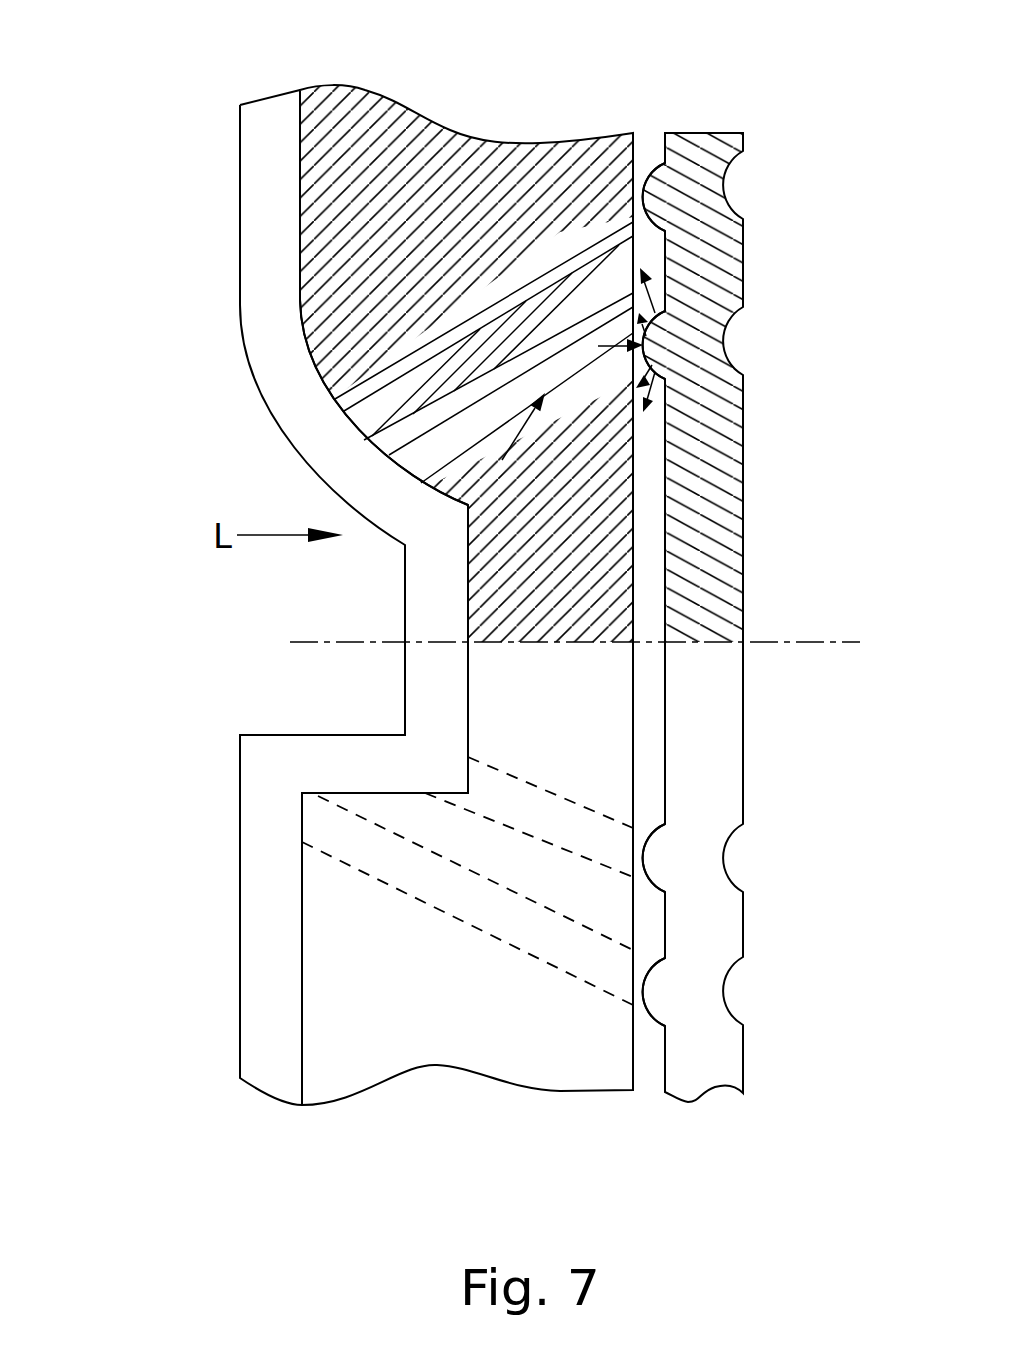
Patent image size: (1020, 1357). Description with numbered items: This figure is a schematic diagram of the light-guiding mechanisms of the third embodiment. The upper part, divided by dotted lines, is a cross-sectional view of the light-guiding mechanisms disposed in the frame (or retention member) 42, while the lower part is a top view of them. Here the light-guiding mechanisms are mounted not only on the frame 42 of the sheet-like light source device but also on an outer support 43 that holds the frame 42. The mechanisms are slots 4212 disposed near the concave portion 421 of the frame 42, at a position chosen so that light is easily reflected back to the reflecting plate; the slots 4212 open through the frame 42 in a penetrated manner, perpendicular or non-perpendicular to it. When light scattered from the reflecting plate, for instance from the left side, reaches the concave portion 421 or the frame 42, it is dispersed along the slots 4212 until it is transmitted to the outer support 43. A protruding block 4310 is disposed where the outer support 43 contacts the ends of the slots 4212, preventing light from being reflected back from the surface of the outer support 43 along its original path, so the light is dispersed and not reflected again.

The frame (or retention member) 42 is at (337, 1010).
The concave portion 421 is at (253, 607).
The slots 4212 is at (360, 415).
The outer support 43 is at (707, 149).
The protruding block 4310 is at (657, 180).